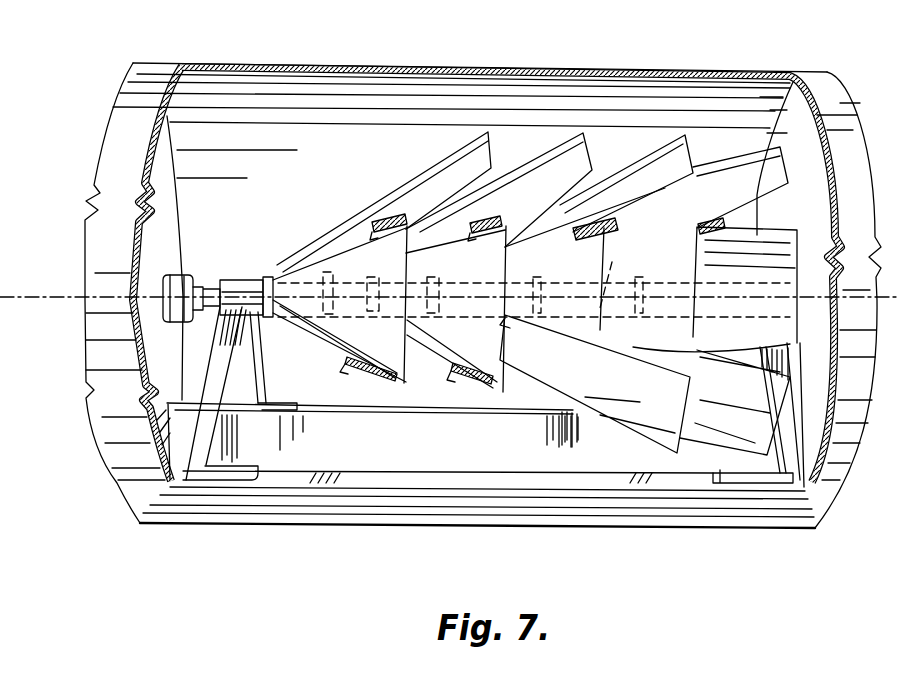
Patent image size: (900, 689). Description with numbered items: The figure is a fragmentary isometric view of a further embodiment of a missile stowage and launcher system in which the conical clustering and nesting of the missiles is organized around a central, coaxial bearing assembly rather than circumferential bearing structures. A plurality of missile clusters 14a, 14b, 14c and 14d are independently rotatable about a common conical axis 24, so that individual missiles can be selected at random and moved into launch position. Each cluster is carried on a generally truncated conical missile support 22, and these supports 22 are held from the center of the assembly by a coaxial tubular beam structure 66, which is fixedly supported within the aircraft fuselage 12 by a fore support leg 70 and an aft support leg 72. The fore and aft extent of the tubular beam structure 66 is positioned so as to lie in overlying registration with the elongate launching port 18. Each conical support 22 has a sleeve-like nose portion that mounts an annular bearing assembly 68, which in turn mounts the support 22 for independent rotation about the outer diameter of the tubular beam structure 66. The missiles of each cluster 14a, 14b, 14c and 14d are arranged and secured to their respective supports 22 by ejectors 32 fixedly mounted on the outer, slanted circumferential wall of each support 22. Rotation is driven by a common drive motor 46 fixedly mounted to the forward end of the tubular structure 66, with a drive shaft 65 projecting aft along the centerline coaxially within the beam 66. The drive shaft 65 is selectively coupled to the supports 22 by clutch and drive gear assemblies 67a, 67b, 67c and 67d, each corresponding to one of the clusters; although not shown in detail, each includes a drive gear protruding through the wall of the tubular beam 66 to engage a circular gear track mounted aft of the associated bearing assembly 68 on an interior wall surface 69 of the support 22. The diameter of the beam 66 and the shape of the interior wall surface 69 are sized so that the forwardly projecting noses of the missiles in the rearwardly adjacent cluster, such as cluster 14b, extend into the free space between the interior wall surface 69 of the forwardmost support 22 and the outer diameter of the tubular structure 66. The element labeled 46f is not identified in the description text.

The aircraft fuselage 12 is at (157, 70).
The common conical axis 24 is at (58, 297).
The common drive motor 46 is at (180, 276).
The drive shaft 65 is at (231, 278).
The tubular beam structure 66 is at (250, 279).
The annular bearing assembly 68 is at (290, 262).
The interior wall surface 69 is at (330, 355).
The clutch and drive gear assembly 67a is at (328, 270).
The clutch and drive gear assembly 67b is at (445, 212).
The clutch and drive gear assembly 67c is at (543, 274).
The clutch and drive gear assembly 67d is at (641, 280).
The hidden shaft element 46f is at (621, 275).
The missile cluster 14a is at (362, 193).
The missile cluster 14b is at (533, 157).
The missile cluster 14c is at (625, 161).
The missile cluster 14d is at (726, 158).
The truncated conical missile support 22 is at (600, 226).
The ejector 32 is at (380, 220).
The fore support leg 70 is at (210, 388).
The aft support leg 72 is at (798, 357).
The elongate launching port 18 is at (466, 474).